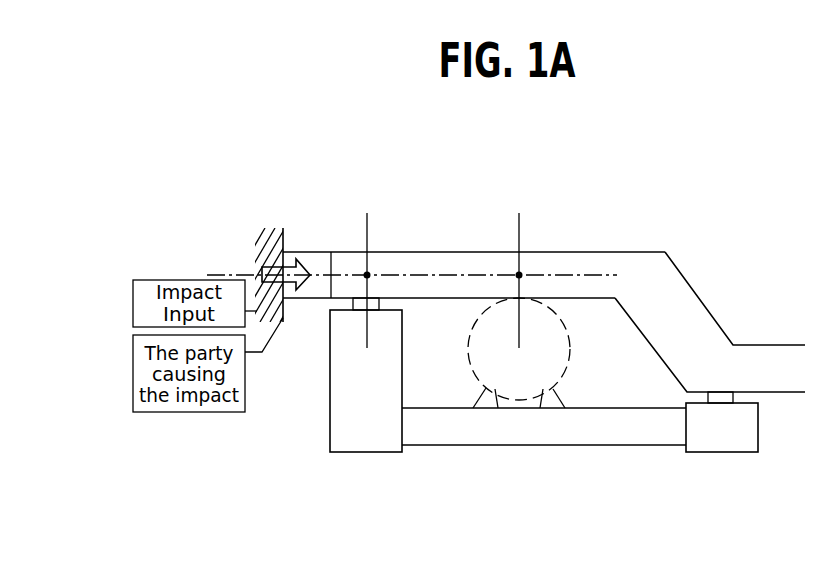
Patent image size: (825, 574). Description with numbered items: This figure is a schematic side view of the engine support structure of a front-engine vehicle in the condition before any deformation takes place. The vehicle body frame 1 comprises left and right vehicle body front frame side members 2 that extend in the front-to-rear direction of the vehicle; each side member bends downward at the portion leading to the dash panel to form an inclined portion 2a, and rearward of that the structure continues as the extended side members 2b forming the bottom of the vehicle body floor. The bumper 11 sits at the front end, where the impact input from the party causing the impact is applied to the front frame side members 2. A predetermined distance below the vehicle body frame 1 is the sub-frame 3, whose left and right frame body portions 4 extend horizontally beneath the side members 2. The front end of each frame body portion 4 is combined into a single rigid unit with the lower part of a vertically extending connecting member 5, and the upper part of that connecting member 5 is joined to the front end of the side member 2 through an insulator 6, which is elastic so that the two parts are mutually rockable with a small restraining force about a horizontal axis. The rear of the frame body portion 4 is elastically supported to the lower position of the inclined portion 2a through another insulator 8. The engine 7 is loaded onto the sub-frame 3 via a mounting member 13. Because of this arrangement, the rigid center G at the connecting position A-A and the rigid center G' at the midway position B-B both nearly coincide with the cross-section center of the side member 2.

The vehicle body frame 1 is at (537, 339).
The vehicle body front frame side member 2 is at (544, 324).
The inclined portion 2a is at (697, 290).
The extended side member 2b is at (785, 377).
The sub-frame 3 is at (514, 417).
The frame body portion 4 is at (605, 445).
The connecting member 5 is at (342, 392).
The insulator 6 is at (372, 305).
The engine 7 is at (577, 352).
The insulator 8 is at (720, 398).
The bumper 11 is at (317, 262).
The mounting member 13 is at (560, 396).